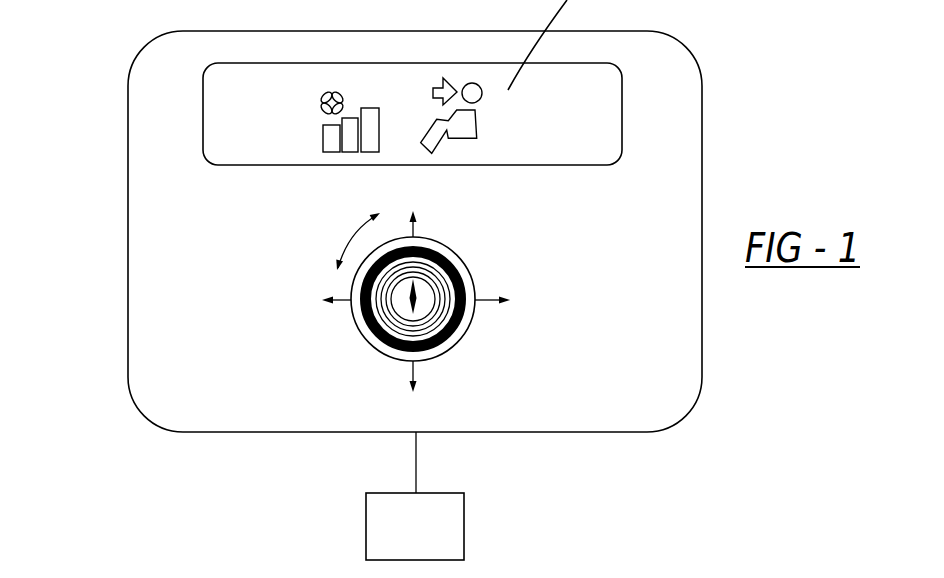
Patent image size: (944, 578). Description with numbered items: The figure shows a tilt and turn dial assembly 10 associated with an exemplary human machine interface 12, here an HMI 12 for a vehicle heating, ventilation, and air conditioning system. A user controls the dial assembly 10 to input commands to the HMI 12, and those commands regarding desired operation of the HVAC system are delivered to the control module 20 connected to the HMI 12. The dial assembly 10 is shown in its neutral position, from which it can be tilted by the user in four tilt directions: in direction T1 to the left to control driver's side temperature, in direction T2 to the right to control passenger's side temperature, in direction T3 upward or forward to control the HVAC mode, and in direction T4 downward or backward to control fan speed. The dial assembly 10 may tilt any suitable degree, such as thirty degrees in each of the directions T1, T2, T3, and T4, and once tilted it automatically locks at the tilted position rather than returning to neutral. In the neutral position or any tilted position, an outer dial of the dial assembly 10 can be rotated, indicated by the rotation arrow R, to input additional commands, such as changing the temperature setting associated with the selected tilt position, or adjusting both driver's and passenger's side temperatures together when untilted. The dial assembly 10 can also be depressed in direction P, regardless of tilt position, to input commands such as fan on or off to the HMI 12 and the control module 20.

The human machine interface 12 is at (118, 86).
The tilt and turn dial assembly 10 is at (425, 307).
The depression direction P is at (420, 294).
The rotation direction R is at (348, 242).
The tilt direction T1 is at (350, 301).
The tilt direction T2 is at (482, 297).
The tilt direction T3 is at (413, 230).
The tilt direction T4 is at (413, 372).
The control module 20 is at (465, 519).